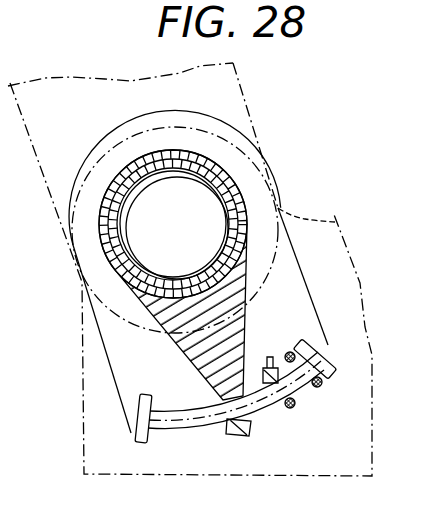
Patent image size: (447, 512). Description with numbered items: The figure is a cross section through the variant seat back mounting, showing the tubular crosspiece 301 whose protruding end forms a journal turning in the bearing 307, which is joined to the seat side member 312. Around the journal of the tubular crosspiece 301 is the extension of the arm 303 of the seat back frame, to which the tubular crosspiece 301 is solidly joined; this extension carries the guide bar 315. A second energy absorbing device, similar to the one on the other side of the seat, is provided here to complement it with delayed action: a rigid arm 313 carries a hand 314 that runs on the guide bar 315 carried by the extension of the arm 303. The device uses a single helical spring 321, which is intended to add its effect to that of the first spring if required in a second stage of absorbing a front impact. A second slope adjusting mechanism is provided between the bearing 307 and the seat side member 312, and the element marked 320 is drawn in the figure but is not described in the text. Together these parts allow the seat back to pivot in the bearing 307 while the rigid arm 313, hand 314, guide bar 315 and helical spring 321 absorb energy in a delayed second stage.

The tubular crosspiece 301 is at (176, 170).
The bearing 307 is at (205, 160).
The seat side member 312 is at (305, 229).
The arm of the seat back frame 303 is at (274, 335).
The rigid arm 313 is at (200, 344).
The guide bar 315 is at (213, 426).
The hand 314 is at (244, 430).
The nut 320 is at (297, 413).
The helical spring 321 is at (313, 389).